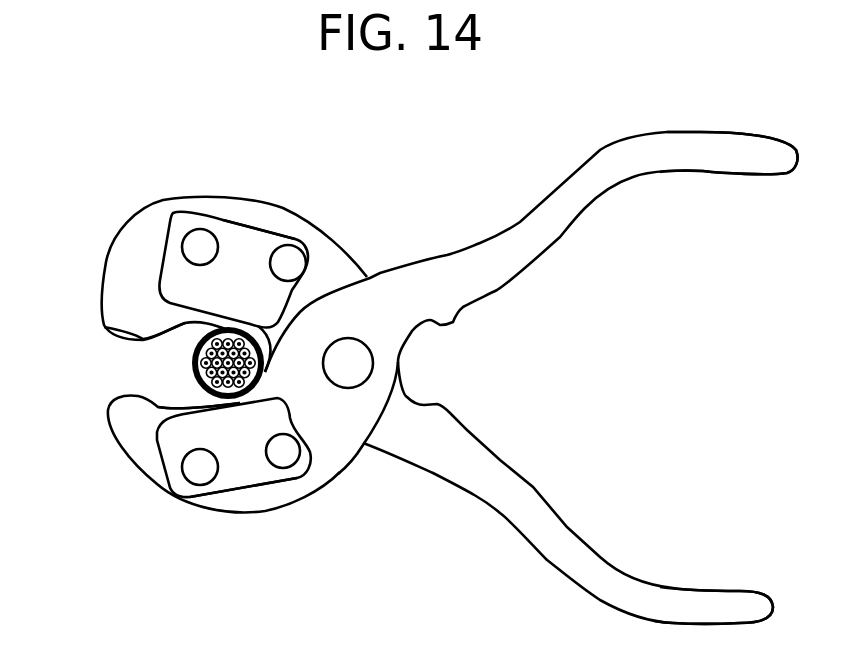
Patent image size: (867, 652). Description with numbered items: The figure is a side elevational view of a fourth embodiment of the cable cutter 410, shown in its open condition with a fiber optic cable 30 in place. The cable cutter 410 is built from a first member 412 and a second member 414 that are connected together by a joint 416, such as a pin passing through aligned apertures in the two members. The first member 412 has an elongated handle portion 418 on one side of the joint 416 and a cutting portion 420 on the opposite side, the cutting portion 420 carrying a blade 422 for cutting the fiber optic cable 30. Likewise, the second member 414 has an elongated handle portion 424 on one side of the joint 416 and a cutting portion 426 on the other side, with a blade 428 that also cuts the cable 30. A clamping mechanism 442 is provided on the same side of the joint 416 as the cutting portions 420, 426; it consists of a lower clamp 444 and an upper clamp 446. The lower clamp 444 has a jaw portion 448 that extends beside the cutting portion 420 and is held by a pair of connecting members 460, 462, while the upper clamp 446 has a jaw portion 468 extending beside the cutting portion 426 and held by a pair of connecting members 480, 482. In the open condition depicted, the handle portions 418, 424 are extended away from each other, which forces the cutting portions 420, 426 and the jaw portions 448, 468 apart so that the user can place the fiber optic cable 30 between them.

The fiber optic cable 30 is at (195, 371).
The cable cutter 410 is at (437, 196).
The first member 412 is at (503, 245).
The second member 414 is at (510, 497).
The joint 416 is at (358, 366).
The handle portion 418 is at (677, 143).
The cutting portion 420 is at (140, 430).
The blade 422 is at (158, 405).
The handle portion 424 is at (682, 603).
The cutting portion 426 is at (297, 223).
The blade 428 is at (113, 325).
The clamping mechanism 442 is at (298, 136).
The lower clamp 444 is at (237, 472).
The upper clamp 446 is at (180, 222).
The jaw portion 448 is at (262, 470).
The connecting member 460 is at (200, 472).
The connecting member 462 is at (287, 459).
The jaw portion 468 is at (243, 240).
The connecting member 480 is at (192, 244).
The connecting member 482 is at (292, 263).